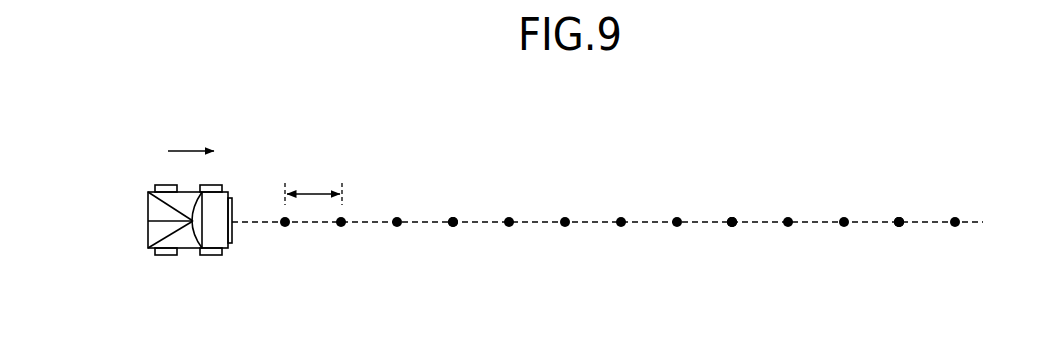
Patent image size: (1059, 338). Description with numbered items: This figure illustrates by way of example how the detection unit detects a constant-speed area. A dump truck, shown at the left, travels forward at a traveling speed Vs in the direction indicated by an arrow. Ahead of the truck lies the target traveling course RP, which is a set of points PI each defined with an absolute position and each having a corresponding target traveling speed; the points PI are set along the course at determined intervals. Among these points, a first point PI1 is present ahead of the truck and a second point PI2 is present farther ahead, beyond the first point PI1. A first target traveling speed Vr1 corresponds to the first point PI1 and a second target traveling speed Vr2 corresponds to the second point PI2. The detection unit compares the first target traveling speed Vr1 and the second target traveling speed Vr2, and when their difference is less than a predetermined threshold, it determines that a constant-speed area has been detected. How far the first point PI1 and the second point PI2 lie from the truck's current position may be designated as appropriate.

The points PI is at (339, 233).
The target traveling course RP is at (473, 218).
The first point PI1 is at (731, 232).
The first target traveling speed Vr1 is at (734, 272).
The second point PI2 is at (898, 232).
The second target traveling speed Vr2 is at (902, 272).
The traveling speed Vs is at (207, 151).